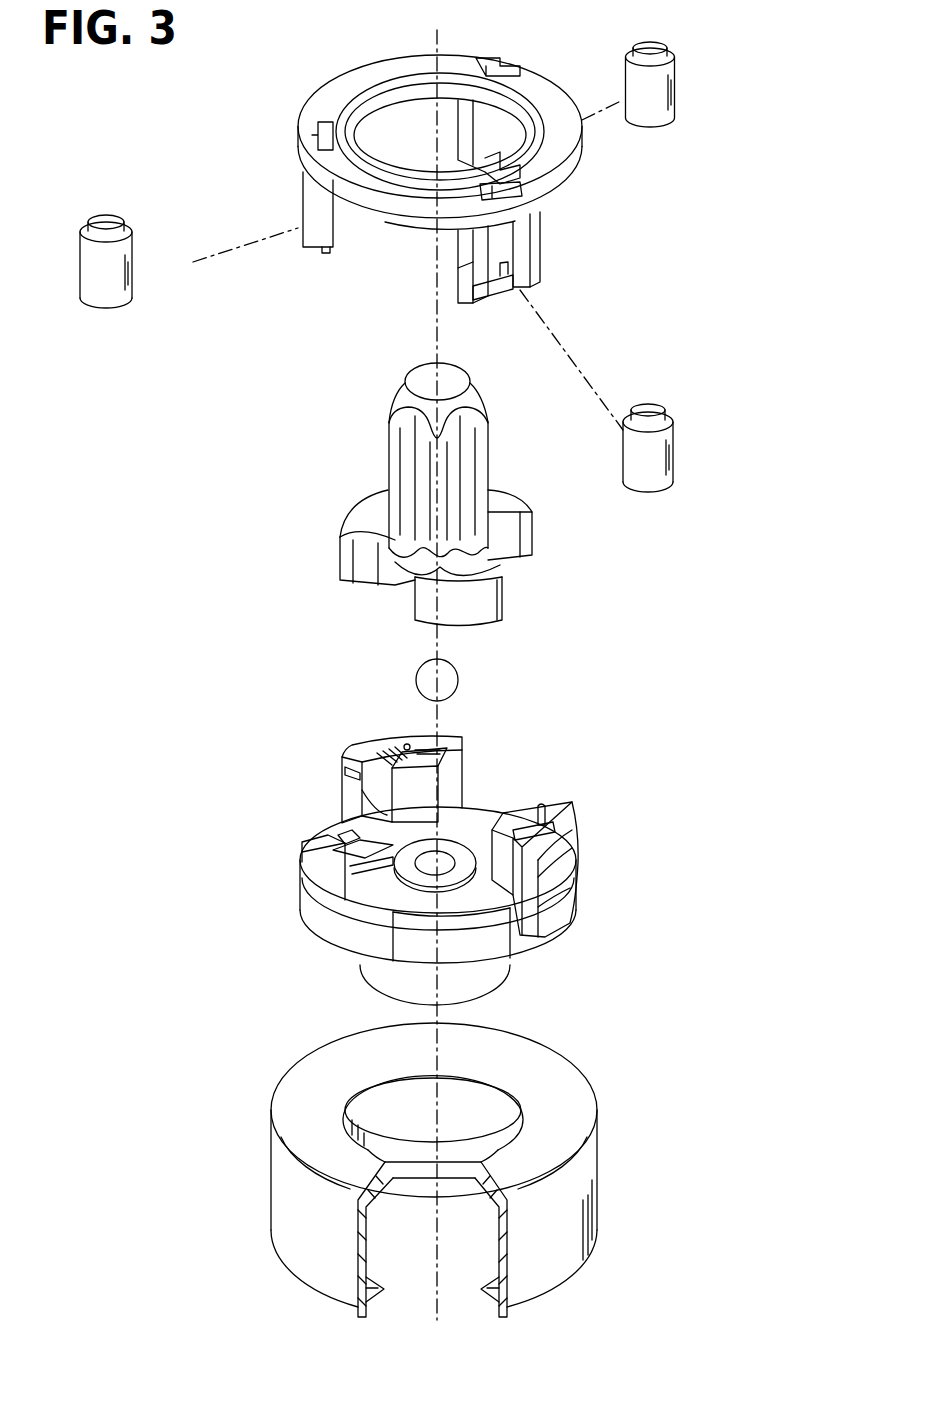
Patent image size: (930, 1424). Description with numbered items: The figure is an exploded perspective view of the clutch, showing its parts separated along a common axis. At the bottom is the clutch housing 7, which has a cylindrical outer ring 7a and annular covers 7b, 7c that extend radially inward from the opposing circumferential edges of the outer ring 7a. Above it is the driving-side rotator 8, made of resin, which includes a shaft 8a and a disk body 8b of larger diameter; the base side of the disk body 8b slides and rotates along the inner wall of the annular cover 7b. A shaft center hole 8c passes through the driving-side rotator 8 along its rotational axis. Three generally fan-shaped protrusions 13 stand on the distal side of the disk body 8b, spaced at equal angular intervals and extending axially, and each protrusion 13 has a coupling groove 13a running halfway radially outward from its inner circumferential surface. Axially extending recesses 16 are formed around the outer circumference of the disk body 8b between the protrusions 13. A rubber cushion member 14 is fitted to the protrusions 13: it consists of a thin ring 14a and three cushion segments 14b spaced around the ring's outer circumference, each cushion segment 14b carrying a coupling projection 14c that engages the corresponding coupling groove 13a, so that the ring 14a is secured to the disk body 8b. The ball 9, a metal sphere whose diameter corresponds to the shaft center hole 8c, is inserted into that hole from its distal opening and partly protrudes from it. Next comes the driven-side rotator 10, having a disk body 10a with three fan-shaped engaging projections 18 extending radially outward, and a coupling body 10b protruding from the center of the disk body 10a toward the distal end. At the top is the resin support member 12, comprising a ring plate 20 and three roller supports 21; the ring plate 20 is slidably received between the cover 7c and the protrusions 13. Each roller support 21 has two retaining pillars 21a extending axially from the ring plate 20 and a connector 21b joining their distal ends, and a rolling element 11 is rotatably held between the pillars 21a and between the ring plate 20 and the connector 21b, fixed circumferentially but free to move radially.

The clutch housing 7 is at (443, 1170).
The cylindrical outer ring 7a is at (278, 1185).
The annular cover 7b is at (431, 1153).
The annular cover 7c is at (543, 1053).
The driving-side rotator 8 is at (490, 856).
The shaft 8a is at (388, 987).
The disk body 8b is at (313, 910).
The shaft center hole 8c is at (442, 855).
The ball 9 is at (458, 682).
The driven-side rotator 10 is at (432, 502).
The disk body 10a is at (398, 583).
The coupling body 10b is at (403, 457).
The rolling element 11 is at (132, 264).
The support member 12 is at (437, 188).
The protrusion 13 is at (362, 752).
The coupling groove 13a is at (405, 744).
The cushion member 14 is at (489, 809).
The ring 14a is at (460, 888).
The cushion segment 14b is at (385, 800).
The coupling projection 14c is at (357, 772).
The recess 16 is at (430, 952).
The engaging projection 18 is at (352, 513).
The ring plate 20 is at (400, 208).
The roller support 21 is at (302, 212).
The retaining pillar 21a is at (541, 225).
The connector 21b is at (518, 297).